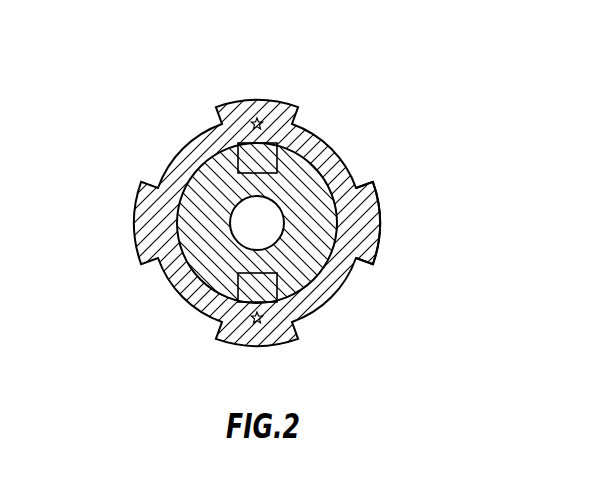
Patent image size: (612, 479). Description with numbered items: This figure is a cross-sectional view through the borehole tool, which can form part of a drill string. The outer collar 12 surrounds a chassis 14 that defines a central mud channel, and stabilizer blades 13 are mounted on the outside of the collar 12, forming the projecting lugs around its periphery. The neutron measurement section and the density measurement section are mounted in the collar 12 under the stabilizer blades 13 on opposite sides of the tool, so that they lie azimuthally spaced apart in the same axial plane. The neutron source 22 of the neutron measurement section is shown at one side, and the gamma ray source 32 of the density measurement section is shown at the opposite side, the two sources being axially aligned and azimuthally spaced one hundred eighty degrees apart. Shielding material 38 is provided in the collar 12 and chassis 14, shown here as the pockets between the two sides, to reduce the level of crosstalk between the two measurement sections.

The collar 12 is at (168, 156).
The stabilizer blades 13 is at (387, 197).
The chassis 14 is at (310, 168).
The shielding material 38 is at (282, 147).
The gamma ray source 32 is at (250, 113).
The neutron source 22 is at (248, 330).